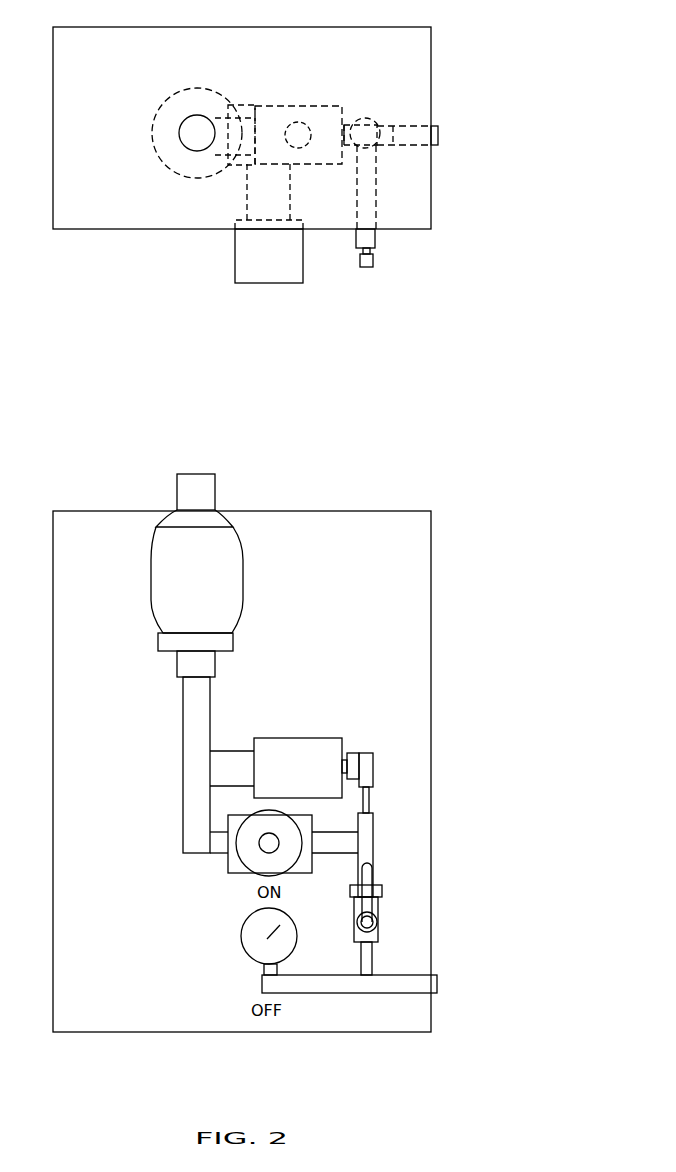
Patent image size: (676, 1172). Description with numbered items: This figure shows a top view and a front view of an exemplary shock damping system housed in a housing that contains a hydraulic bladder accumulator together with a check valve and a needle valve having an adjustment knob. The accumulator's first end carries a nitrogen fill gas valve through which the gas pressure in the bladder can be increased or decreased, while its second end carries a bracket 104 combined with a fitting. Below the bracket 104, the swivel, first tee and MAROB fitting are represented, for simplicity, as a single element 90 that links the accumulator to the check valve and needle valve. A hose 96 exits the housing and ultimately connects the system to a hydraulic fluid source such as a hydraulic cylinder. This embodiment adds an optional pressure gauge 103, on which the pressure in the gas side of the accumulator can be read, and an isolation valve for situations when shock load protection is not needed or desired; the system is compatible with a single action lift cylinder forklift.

The swivel, tee and MAROB fitting assembly 90 is at (183, 700).
The hose 96 is at (428, 983).
The pressure gauge 103 is at (245, 953).
The bracket 104 is at (223, 643).